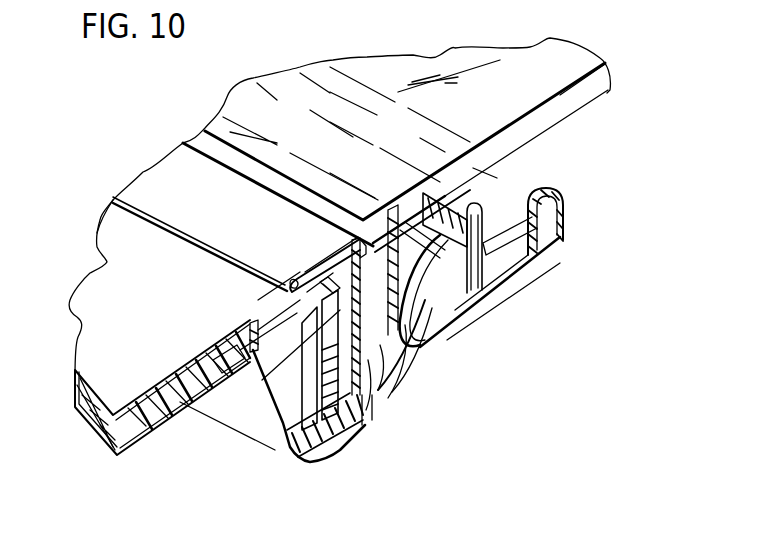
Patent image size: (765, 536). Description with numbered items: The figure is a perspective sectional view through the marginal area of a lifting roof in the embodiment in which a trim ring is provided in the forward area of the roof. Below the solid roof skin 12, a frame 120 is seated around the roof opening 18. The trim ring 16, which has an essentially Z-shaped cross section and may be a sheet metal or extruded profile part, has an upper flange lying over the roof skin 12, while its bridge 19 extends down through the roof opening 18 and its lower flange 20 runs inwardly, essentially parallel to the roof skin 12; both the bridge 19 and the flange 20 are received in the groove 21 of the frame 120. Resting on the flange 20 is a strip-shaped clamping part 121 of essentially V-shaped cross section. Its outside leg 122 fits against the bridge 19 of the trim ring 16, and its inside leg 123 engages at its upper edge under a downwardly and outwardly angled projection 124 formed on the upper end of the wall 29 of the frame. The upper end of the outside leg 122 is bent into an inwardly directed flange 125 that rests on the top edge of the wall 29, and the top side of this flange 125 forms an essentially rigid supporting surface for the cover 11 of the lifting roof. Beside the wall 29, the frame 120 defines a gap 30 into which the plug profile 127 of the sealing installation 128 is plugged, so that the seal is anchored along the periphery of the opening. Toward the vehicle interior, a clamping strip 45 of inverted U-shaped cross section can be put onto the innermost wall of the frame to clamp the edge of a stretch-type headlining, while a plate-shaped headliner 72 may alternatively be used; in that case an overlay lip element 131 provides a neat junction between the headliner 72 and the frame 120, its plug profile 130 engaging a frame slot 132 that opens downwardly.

The cover 11 is at (578, 95).
The roof skin 12 is at (123, 288).
The trim ring 16 is at (160, 192).
The roof opening 18 is at (669, 173).
The bridge 19 is at (363, 235).
The flange 20 is at (383, 390).
The groove 21 is at (380, 370).
The wall 29 is at (393, 333).
The gap 30 is at (393, 383).
The clamping strip 45 is at (552, 186).
The headliner 72 is at (85, 413).
The frame 120 is at (517, 280).
The clamping part 121 is at (360, 390).
The outside leg 122 is at (370, 397).
The inside leg 123 is at (390, 337).
The projection 124 is at (423, 313).
The flange 125 is at (371, 240).
The plug profile 127 is at (445, 290).
The sealing installation 128 is at (518, 252).
The plug profile 130 is at (302, 435).
The overlay lip element 131 is at (290, 415).
The frame slot 132 is at (265, 412).